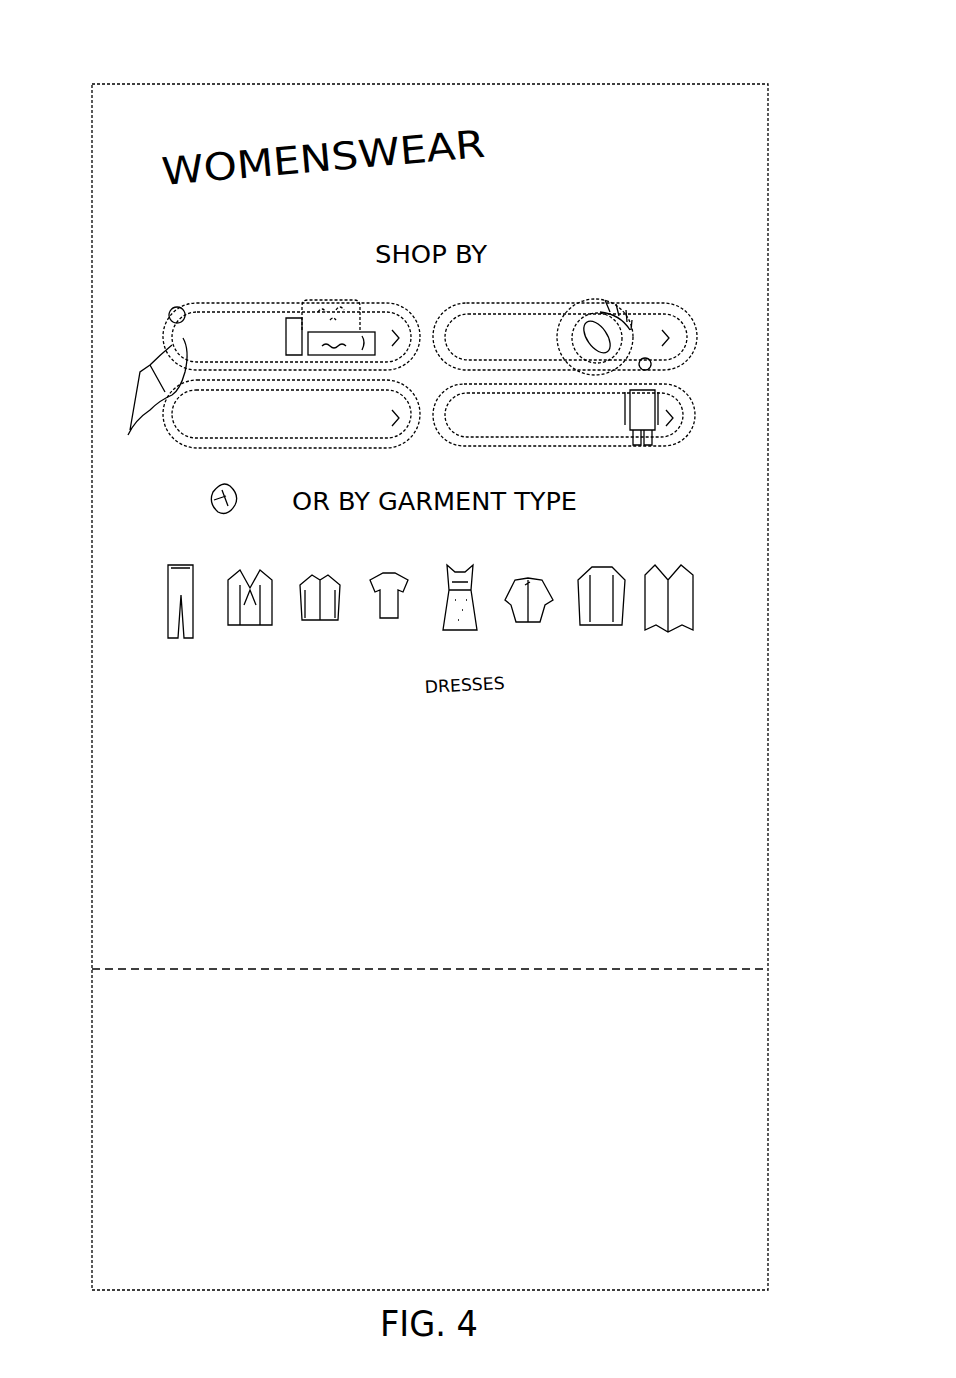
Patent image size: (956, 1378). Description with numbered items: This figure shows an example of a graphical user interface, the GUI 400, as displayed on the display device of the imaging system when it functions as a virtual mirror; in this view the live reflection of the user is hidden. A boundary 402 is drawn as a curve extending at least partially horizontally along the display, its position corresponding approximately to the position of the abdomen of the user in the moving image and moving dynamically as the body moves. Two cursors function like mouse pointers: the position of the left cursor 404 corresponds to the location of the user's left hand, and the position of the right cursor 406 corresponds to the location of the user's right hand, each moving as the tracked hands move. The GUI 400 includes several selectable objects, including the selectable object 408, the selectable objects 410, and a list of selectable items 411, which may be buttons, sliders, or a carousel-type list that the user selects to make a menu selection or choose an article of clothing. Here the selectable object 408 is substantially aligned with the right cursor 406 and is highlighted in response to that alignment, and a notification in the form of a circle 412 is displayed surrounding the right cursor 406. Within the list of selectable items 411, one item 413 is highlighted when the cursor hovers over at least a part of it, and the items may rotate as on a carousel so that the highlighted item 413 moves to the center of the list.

The GUI 400 is at (784, 68).
The boundary 402 is at (122, 970).
The left cursor 404 is at (215, 500).
The right cursor 406 is at (622, 347).
The selectable object 408 is at (672, 346).
The selectable objects 410 is at (178, 320).
The list of selectable items 411 is at (160, 603).
The circle 412 is at (598, 306).
The item 413 is at (452, 620).